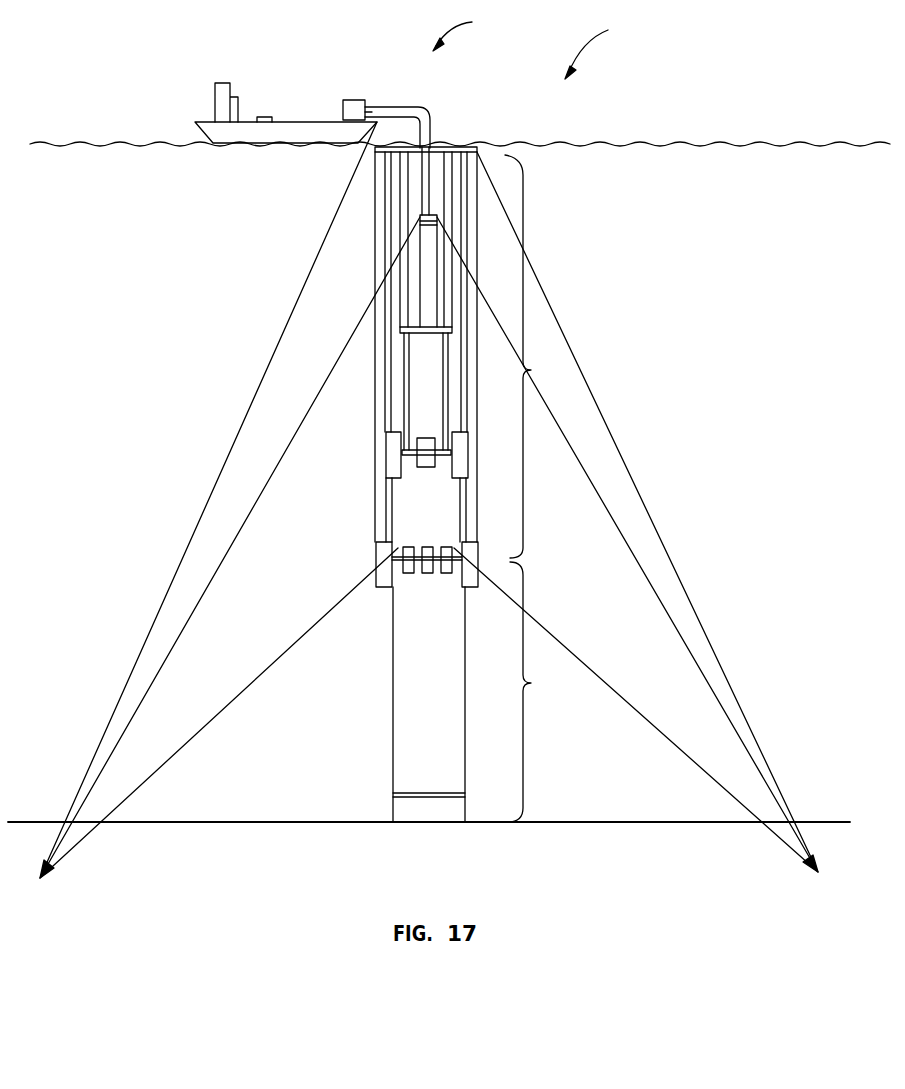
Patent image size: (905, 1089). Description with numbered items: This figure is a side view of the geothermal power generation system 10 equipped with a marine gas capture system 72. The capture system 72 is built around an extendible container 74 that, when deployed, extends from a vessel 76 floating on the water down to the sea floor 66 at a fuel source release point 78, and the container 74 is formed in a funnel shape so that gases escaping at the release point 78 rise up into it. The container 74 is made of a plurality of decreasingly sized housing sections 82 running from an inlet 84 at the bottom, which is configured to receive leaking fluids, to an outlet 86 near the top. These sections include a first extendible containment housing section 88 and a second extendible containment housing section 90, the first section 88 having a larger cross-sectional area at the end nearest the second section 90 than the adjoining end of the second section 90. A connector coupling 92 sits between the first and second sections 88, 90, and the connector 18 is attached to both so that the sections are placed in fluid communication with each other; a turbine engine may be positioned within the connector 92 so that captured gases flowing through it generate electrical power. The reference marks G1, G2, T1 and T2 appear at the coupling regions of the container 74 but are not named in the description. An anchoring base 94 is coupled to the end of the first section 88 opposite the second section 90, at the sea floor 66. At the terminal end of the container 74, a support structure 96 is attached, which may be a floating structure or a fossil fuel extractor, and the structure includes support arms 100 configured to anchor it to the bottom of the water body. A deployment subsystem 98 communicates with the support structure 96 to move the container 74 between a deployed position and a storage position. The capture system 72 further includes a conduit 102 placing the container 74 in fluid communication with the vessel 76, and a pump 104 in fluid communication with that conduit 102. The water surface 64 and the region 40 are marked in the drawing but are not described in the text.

The geothermal power generation system 10 is at (465, 31).
The marine gas capture system 72 is at (599, 49).
The vessel 76 is at (300, 122).
The deployment subsystem 98 is at (366, 99).
The support arms 100 is at (414, 108).
The conduit 102 is at (398, 113).
The pump 104 is at (352, 113).
The support structure 96 is at (463, 148).
The sea surface 64 is at (632, 142).
The sea floor 66 is at (345, 820).
The extendible container 74 is at (480, 246).
The mooring lines 40 is at (268, 341).
The second extendible containment housing section 90 is at (532, 356).
The first extendible containment housing section 88 is at (535, 692).
The connector coupling 92 is at (478, 553).
The second guide G2 is at (390, 466).
The first guide G1 is at (385, 552).
The second tool T2 is at (425, 468).
The first tool T1 is at (427, 574).
The connector 18 is at (420, 437).
The outlet 86 is at (397, 548).
The housing sections 82 is at (478, 507).
The anchoring base 94 is at (393, 824).
The fuel source release point 78 is at (430, 824).
The inlet 84 is at (450, 824).